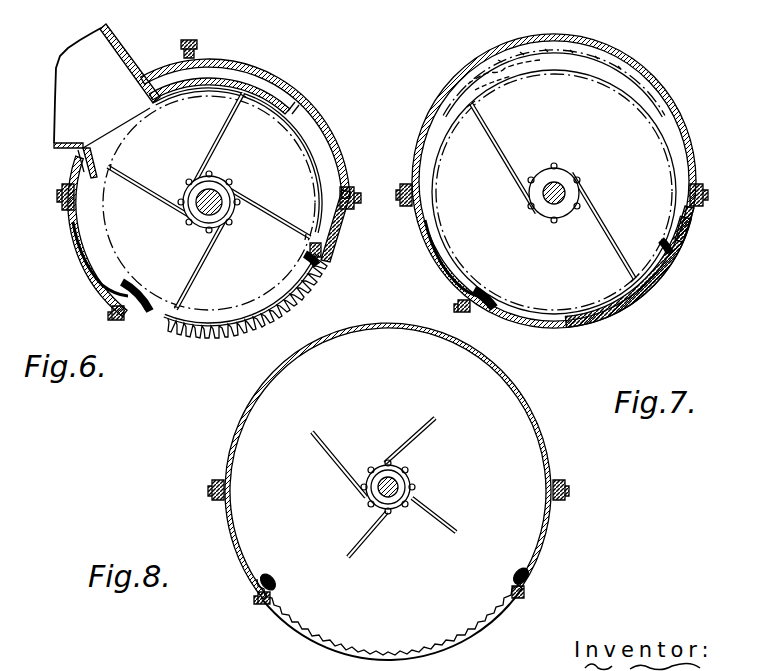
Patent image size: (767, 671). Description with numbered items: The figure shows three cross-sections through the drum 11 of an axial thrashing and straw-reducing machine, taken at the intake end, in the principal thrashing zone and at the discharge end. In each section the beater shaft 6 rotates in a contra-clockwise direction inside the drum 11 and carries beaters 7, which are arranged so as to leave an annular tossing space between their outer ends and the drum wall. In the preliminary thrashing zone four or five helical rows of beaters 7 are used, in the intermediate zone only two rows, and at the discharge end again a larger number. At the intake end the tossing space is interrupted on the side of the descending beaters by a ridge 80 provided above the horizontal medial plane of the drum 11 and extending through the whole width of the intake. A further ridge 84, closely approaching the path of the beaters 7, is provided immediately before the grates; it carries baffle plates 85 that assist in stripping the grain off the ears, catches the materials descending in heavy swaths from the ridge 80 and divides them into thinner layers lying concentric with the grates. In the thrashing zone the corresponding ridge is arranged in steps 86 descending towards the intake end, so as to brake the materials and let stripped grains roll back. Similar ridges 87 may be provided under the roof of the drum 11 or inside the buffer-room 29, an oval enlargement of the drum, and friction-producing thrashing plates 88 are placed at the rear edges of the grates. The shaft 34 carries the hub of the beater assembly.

In FIG. 6, the beater shaft 6 is at (200, 232).
In FIG. 8, the beater shaft 6 is at (400, 484).
In FIG. 6, the beaters 7 is at (250, 195).
In FIG. 8, the beaters 7 is at (413, 427).
In FIG. 7, the drum 11 is at (474, 78).
In FIG. 7, the buffer-room 29 is at (592, 68).
In FIG. 6, the shaft 34 is at (211, 214).
In FIG. 7, the shaft 34 is at (568, 188).
In FIG. 8, the shaft 34 is at (393, 503).
In FIG. 6, the ridge 80 is at (95, 171).
In FIG. 6, the ridge 84 is at (100, 270).
In FIG. 6, the baffle plates 85 is at (150, 308).
In FIG. 7, the steps 86 is at (493, 306).
In FIG. 7, the ridges 87 is at (543, 58).
In FIG. 6, the thrashing plates 88 is at (303, 250).
In FIG. 7, the thrashing plates 88 is at (667, 245).
In FIG. 8, the thrashing plates 88 is at (266, 577).